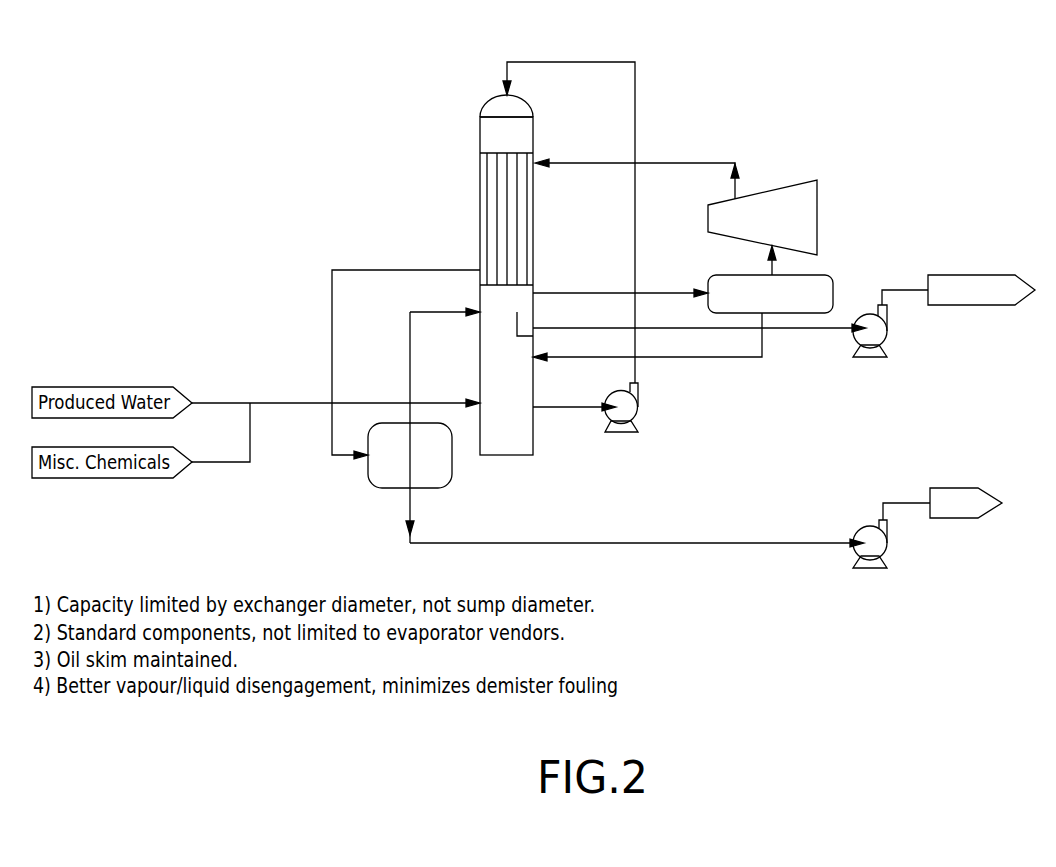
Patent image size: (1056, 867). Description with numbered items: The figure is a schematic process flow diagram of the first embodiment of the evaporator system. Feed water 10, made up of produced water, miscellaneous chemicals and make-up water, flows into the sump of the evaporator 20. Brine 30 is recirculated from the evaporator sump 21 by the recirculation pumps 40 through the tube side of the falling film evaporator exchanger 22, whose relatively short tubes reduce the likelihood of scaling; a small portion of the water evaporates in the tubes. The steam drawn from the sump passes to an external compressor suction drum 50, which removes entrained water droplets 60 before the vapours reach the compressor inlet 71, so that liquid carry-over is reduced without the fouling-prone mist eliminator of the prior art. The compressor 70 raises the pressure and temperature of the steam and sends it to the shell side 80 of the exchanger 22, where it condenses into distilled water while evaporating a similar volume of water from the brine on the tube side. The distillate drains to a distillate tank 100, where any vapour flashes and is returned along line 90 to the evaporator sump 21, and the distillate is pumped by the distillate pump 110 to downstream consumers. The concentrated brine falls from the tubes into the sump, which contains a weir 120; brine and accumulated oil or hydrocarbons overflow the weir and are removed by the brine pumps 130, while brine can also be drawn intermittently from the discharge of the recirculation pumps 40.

The feed water 10 is at (336, 389).
The evaporator 20 is at (509, 289).
The evaporator sump 21 is at (635, 412).
The falling film evaporator exchanger 22 is at (487, 210).
The brine 30 is at (569, 217).
The recirculation pumps 40 is at (640, 410).
The compressor suction drum 50 is at (837, 277).
The entrained water droplets 60 is at (620, 279).
The compressor 70 is at (790, 180).
The compressor inlet 71 is at (768, 245).
The shell side 80 is at (535, 155).
The recycle line 90 is at (406, 350).
The distillate tank 100 is at (438, 483).
The distillate pump 110 is at (919, 556).
The weir 120 is at (517, 320).
The brine pumps 130 is at (784, 341).